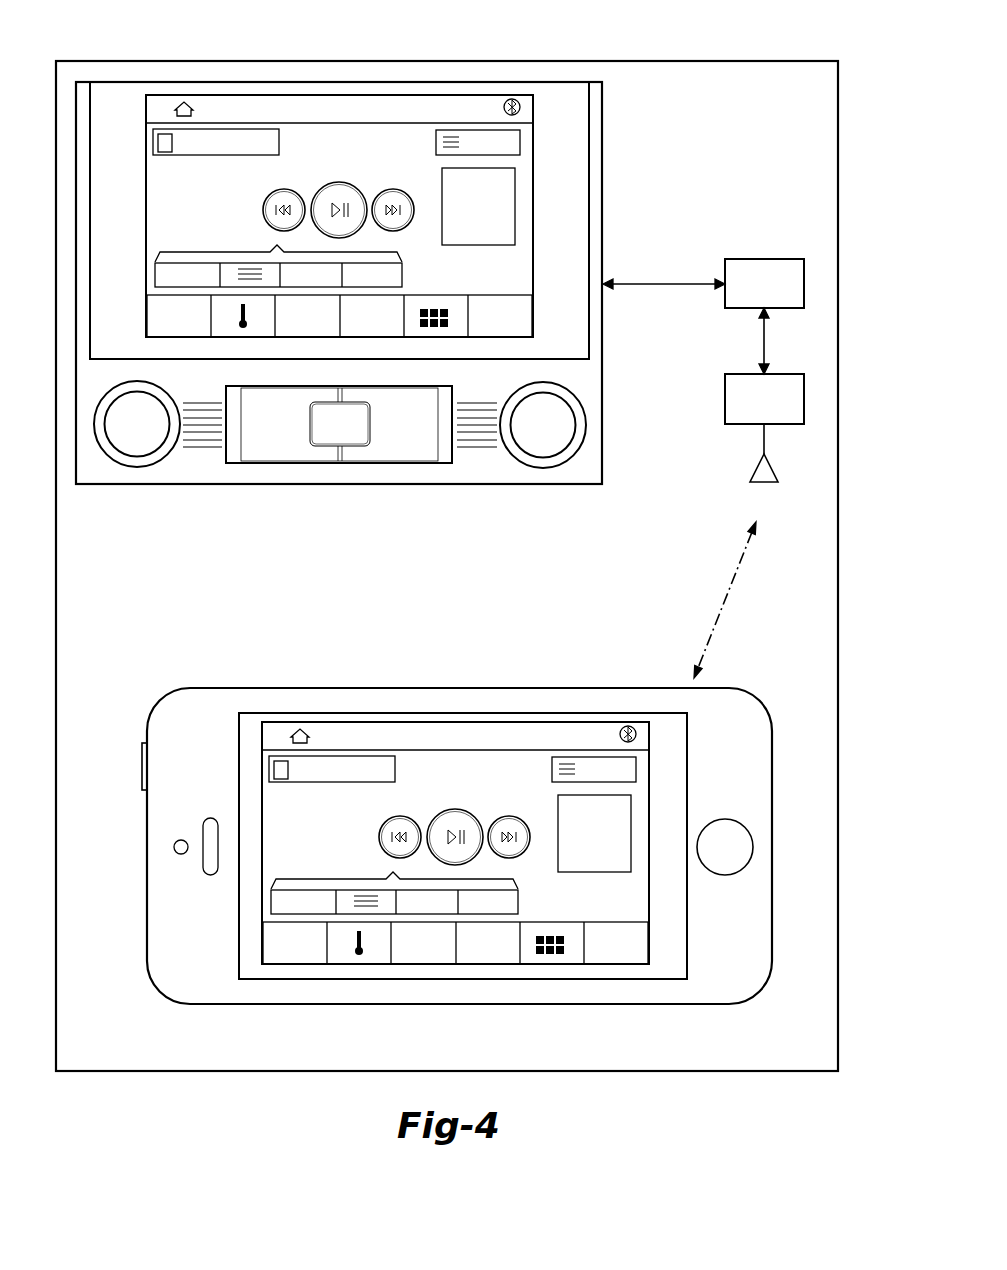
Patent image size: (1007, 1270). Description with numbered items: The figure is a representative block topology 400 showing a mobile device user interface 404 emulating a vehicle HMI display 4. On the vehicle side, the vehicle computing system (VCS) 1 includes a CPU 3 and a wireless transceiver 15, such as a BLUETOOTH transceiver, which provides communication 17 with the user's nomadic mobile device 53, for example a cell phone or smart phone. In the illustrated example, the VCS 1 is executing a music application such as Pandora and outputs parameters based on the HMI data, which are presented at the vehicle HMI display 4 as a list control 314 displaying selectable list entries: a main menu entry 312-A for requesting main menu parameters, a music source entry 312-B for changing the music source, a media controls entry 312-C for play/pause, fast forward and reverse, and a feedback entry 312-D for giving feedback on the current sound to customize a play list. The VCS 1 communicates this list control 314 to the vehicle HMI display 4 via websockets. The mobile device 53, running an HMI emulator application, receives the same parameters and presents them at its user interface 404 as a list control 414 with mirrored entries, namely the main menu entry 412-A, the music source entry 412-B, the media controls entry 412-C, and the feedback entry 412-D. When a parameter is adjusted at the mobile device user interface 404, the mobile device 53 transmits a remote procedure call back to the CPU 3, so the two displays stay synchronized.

The vehicle computing system (VCS) 1 is at (145, 60).
The CPU 3 is at (765, 259).
The vehicle HMI display 4 is at (534, 205).
The wireless transceiver 15 is at (725, 400).
The communication 17 is at (758, 468).
The mobile device 53 is at (345, 688).
The list control 314 is at (168, 210).
The main menu entry 312-A is at (520, 142).
The music source entry 312-B is at (153, 141).
The media controls entry 312-C is at (276, 190).
The feedback entry 312-D is at (278, 258).
The block topology 400 is at (706, 44).
The mobile device user interface 404 is at (239, 735).
The list control 414 is at (462, 843).
The main menu entry 412-A is at (649, 769).
The music source entry 412-B is at (286, 769).
The media controls entry 412-C is at (438, 816).
The feedback entry 412-D is at (394, 885).